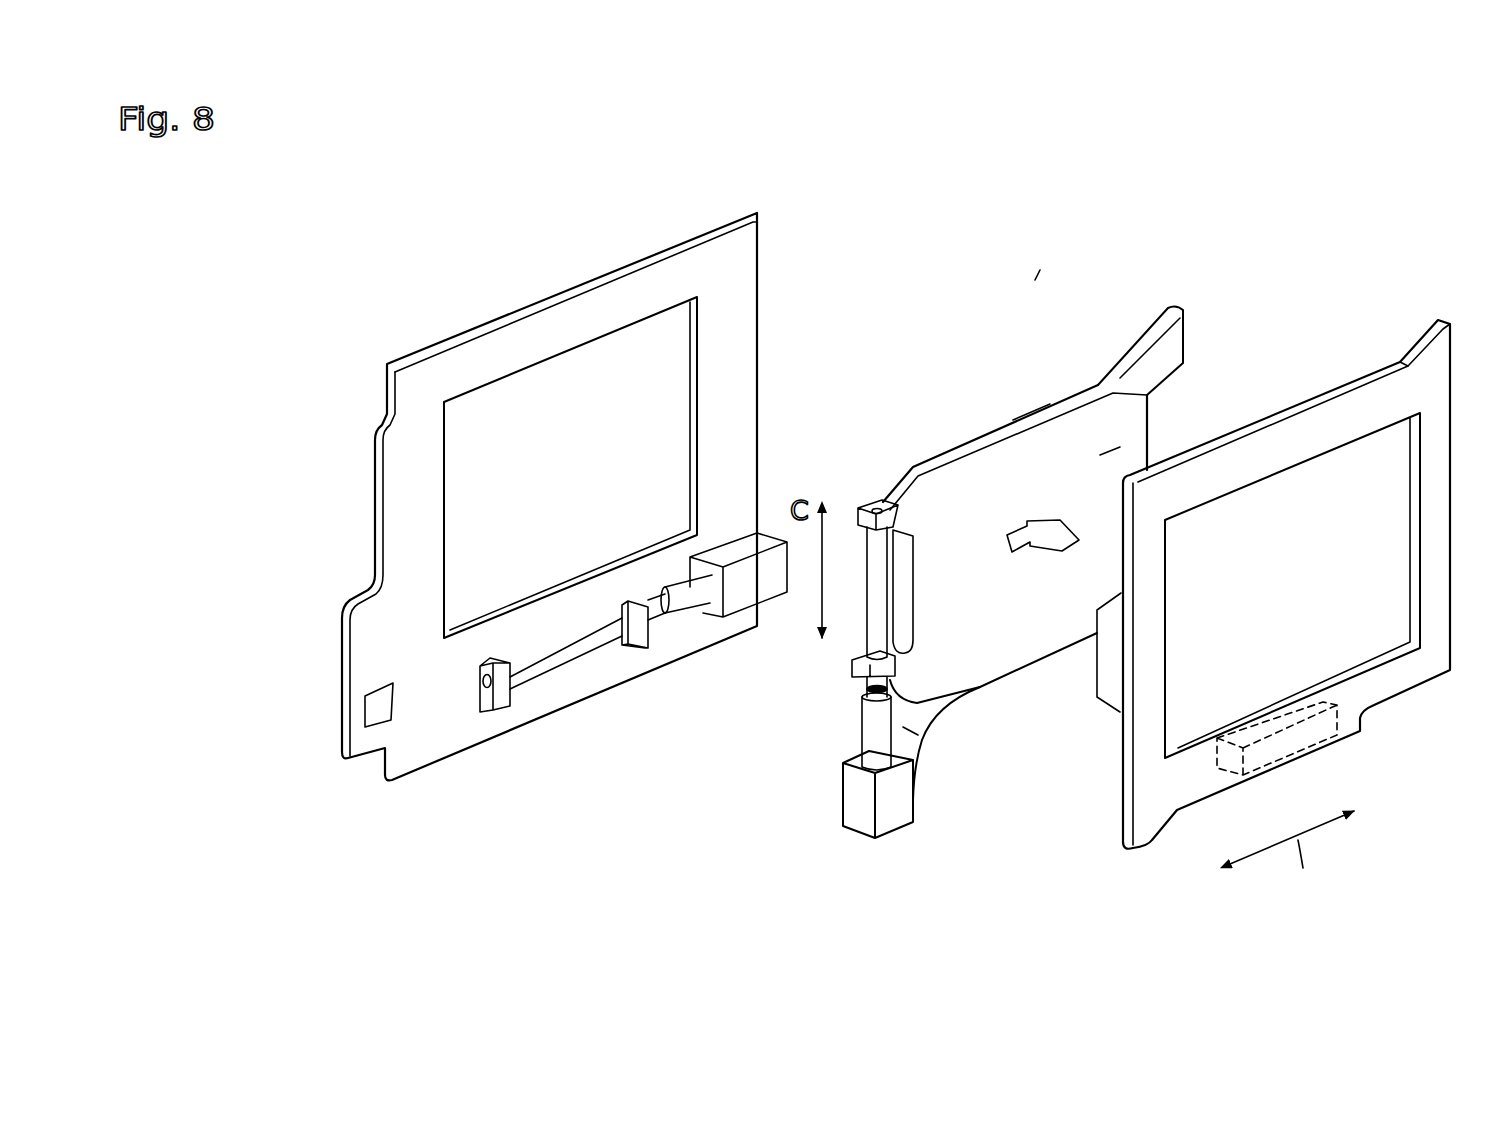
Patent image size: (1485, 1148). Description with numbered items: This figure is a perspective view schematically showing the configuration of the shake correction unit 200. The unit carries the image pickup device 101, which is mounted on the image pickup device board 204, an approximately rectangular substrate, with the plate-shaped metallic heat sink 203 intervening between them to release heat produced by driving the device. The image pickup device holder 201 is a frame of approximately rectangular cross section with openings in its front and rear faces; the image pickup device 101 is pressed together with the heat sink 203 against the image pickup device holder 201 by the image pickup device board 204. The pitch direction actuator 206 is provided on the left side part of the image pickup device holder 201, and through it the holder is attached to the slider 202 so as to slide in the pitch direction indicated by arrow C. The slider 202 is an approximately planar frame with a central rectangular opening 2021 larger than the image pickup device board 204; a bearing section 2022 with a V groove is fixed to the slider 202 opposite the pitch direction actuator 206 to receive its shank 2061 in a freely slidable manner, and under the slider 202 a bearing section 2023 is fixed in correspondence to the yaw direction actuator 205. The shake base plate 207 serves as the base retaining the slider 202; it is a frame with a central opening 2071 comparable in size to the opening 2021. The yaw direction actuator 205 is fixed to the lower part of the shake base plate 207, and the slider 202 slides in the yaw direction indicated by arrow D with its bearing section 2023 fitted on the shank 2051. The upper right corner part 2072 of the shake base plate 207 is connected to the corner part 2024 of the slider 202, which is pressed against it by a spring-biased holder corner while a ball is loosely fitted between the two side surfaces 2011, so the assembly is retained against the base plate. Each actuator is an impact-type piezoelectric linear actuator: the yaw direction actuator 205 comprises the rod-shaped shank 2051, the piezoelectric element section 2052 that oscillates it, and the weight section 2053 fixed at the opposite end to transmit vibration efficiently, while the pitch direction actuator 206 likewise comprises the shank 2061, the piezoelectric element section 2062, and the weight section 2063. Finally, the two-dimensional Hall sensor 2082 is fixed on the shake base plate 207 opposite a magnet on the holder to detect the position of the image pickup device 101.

The shake correction unit 200 is at (1040, 274).
The image pickup device 101 is at (1100, 452).
The image pickup device holder 201 is at (1059, 514).
The side surfaces of the corner part 2011 is at (1187, 340).
The heat sink 203 is at (1017, 415).
The image pickup device board 204 is at (1000, 618).
The slider 202 is at (1245, 583).
The opening 2021 is at (1311, 468).
The bearing section 2022 is at (1108, 688).
The bearing section 2023 is at (1290, 748).
The corner part 2024 is at (1406, 337).
The yaw direction actuator 205 is at (639, 655).
The shank 2051 is at (544, 660).
The piezoelectric element section 2052 is at (688, 604).
The weight section 2053 is at (764, 594).
The pitch direction actuator 206 is at (844, 663).
The shank 2061 is at (872, 585).
The piezoelectric element section 2062 is at (872, 740).
The weight section 2063 is at (891, 818).
The shake base plate 207 is at (558, 496).
The opening 2071 is at (562, 366).
The upper right corner part 2072 is at (732, 242).
The two-dimensional Hall sensor 2082 is at (375, 713).